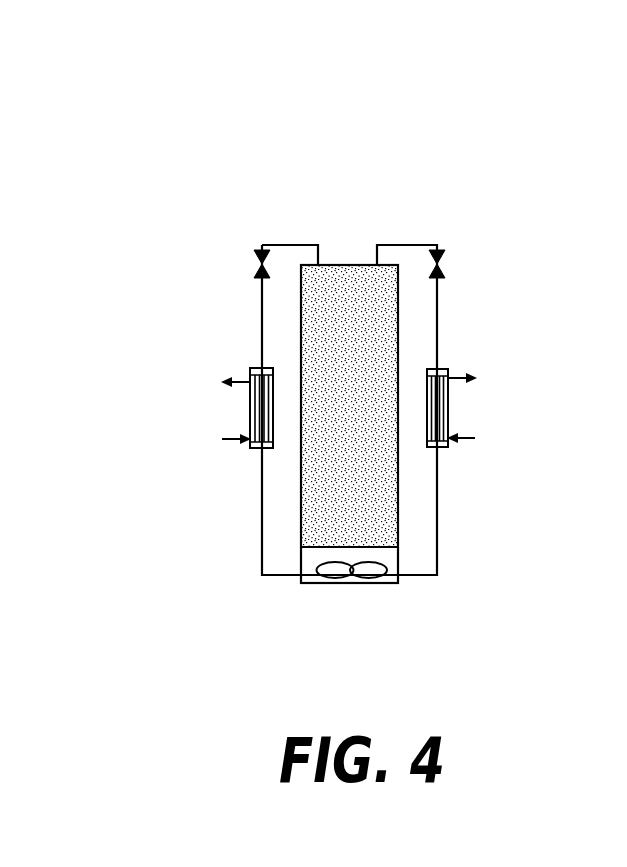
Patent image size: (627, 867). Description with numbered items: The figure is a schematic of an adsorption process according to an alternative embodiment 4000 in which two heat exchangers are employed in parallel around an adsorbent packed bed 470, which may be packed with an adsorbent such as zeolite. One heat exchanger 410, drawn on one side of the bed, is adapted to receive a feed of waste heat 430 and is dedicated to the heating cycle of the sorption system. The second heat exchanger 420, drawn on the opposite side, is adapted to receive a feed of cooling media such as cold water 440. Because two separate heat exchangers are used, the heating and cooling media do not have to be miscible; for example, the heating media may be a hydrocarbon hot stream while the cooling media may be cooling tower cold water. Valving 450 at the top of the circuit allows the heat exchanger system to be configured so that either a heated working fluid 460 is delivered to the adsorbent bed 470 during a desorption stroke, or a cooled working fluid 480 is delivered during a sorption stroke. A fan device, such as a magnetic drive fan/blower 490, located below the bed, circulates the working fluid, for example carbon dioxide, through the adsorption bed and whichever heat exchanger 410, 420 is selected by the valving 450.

The alternative embodiment 4000 is at (380, 118).
The heat exchanger 410 is at (250, 412).
The second heat exchanger 420 is at (449, 420).
The feed of waste heat 430 is at (224, 439).
The cold water 440 is at (475, 438).
The valving 450 is at (436, 245).
The heated working fluid 460 is at (262, 558).
The adsorbent bed 470 is at (399, 326).
The cooled working fluid 480 is at (438, 545).
The magnetic drive fan/blower 490 is at (355, 583).